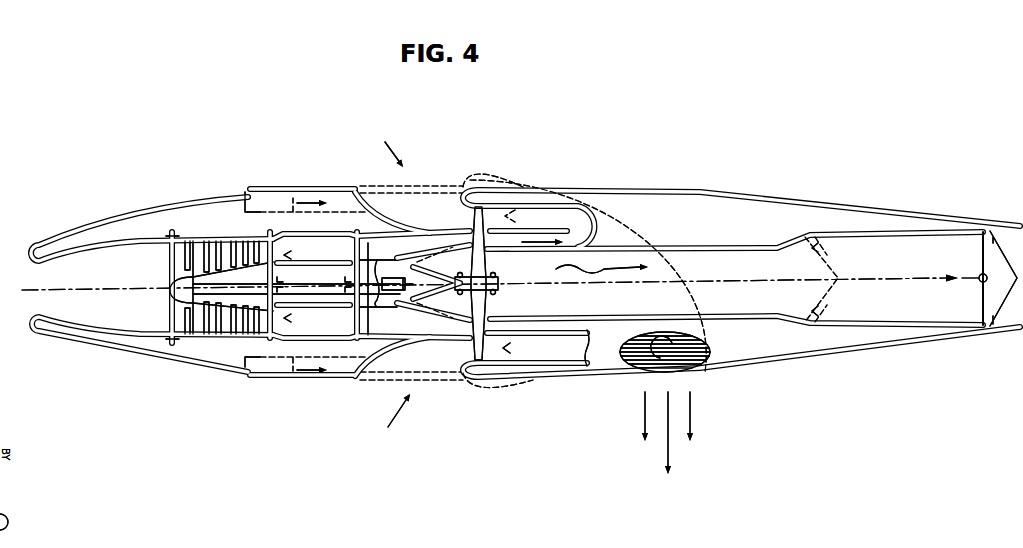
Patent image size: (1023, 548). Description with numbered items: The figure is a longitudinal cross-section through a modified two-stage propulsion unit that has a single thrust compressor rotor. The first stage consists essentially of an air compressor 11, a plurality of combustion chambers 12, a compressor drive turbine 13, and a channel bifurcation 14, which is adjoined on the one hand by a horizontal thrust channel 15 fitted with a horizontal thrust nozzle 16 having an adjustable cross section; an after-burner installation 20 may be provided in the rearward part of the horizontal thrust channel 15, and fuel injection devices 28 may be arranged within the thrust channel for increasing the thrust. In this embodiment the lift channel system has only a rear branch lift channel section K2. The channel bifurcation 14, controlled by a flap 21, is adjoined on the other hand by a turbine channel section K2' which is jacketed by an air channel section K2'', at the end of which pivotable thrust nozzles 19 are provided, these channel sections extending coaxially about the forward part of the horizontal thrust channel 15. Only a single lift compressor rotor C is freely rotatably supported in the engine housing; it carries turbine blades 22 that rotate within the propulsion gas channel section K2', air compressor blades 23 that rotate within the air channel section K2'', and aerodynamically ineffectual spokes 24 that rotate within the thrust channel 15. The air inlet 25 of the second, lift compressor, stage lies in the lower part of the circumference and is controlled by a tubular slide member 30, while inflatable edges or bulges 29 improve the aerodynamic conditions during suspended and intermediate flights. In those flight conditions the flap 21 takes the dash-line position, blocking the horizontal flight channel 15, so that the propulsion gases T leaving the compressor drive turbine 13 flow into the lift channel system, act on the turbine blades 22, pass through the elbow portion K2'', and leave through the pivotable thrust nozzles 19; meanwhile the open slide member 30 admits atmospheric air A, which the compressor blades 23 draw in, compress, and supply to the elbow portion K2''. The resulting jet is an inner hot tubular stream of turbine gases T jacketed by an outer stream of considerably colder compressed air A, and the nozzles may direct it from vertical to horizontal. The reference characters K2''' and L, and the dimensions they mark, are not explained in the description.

The air compressor 11 is at (213, 266).
The combustion chambers 12 is at (311, 318).
The compressor drive turbine 13 is at (352, 320).
The channel bifurcation 14 is at (423, 246).
The horizontal thrust channel 15 is at (706, 258).
The horizontal thrust nozzle 16 is at (1000, 246).
The pivotable thrust nozzles 19 is at (713, 357).
The after-burner installation 20 is at (822, 248).
The flap 21 is at (393, 222).
The turbine blades 22 is at (510, 234).
The air compressor blades 23 is at (473, 343).
The aerodynamically ineffectual spokes 24 is at (475, 299).
The air inlet 25 is at (368, 389).
The fuel injection devices 28 is at (534, 262).
The inflatable edges or bulges 29 is at (492, 394).
The tubular slide member 30 is at (307, 187).
The rear branch lift channel section K2 is at (588, 255).
The turbine channel section K2' is at (540, 226).
The air channel section K2'' is at (741, 180).
The lower outlet flow K2''' is at (749, 327).
The atmospheric air A is at (393, 150).
The propulsion gases T is at (645, 470).
The lift compressor rotor C is at (477, 289).
The exhaust duct length L is at (731, 280).